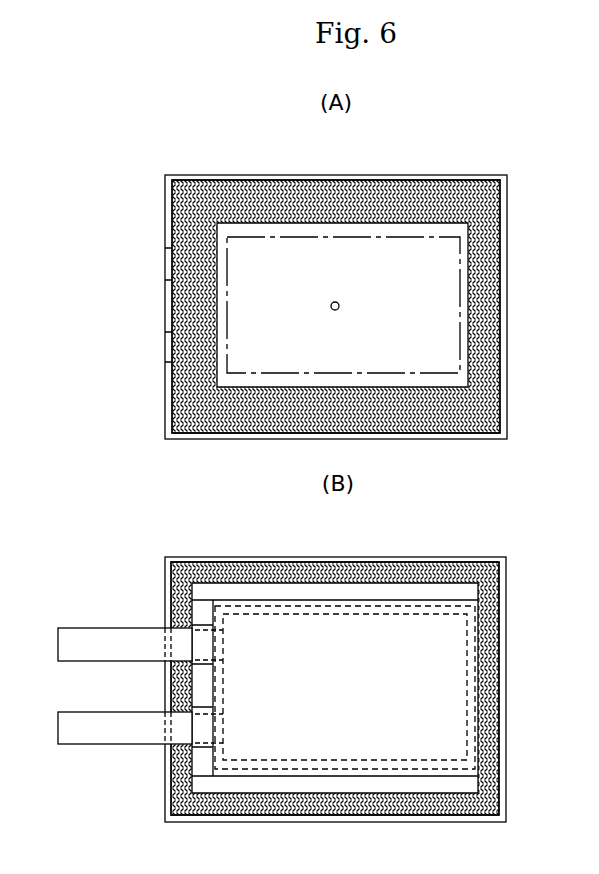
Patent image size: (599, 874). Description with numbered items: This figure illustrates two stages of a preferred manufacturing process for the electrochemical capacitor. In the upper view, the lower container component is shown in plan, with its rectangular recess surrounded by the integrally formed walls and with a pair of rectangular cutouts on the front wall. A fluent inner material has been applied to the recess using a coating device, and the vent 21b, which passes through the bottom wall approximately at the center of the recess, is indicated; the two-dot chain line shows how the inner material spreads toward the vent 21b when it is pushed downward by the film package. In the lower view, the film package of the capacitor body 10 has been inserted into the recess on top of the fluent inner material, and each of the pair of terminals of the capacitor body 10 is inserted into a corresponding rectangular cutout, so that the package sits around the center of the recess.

The capacitor body 10 is at (213, 574).
The vent 21b is at (336, 302).